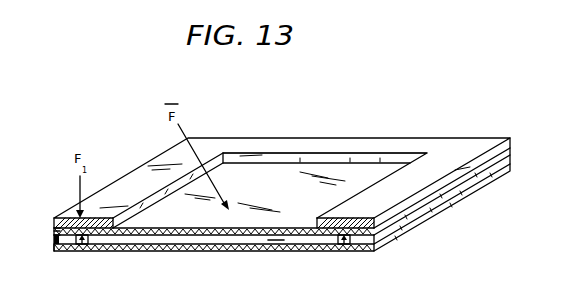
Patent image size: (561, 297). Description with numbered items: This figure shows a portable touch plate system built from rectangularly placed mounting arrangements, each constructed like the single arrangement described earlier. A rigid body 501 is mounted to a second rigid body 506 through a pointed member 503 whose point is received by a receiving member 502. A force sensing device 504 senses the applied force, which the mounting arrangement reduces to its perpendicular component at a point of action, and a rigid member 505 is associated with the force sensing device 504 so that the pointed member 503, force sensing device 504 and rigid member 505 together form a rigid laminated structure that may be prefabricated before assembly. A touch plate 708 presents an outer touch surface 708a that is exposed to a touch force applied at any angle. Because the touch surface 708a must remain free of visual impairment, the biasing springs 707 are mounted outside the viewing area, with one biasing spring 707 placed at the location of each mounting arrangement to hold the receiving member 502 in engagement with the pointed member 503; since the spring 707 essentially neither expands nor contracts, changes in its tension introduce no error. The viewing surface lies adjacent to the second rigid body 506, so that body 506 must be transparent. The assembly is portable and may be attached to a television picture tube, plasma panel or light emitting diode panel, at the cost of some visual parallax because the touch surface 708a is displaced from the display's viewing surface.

The rigid body 501 is at (53, 217).
The receiving member 502 is at (52, 233).
The pointed member 503 is at (347, 247).
The force sensing device 504 is at (65, 251).
The rigid member 505 is at (85, 247).
The second rigid body 506 is at (291, 252).
The biasing spring 707 is at (500, 175).
The touch plate 708 is at (226, 234).
The outer touch surface 708a is at (334, 166).